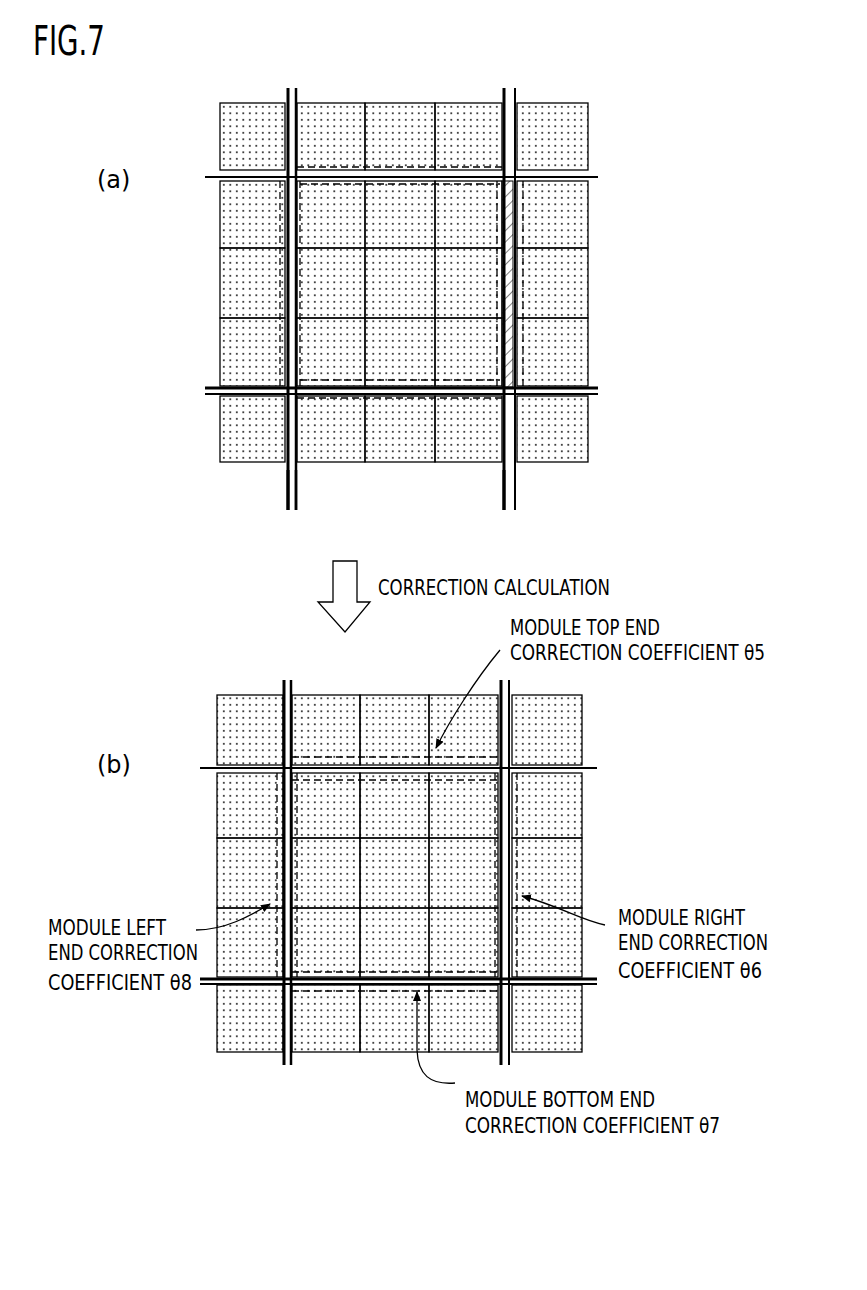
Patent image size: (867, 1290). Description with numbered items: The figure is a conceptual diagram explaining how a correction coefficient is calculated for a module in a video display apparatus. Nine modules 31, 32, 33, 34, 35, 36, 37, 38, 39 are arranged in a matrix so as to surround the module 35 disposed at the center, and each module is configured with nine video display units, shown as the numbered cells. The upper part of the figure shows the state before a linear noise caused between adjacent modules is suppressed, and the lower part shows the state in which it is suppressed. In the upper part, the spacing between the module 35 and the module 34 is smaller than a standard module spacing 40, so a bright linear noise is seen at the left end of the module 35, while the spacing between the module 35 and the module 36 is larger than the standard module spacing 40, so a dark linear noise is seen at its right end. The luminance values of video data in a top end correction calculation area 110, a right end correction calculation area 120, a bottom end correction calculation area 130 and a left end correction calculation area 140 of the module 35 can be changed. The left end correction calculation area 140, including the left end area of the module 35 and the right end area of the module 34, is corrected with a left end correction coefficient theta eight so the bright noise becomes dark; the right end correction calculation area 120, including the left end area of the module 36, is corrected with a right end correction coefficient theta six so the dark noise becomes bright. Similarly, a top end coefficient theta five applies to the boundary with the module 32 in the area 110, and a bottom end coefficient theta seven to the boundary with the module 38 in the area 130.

The module 31 is at (239, 421).
The module 32 is at (397, 421).
The module 33 is at (569, 423).
The module 34 is at (233, 579).
The module 35 is at (423, 288).
The module 36 is at (567, 579).
The module 37 is at (238, 740).
The module 38 is at (397, 737).
The module 39 is at (566, 735).
The standard module spacing 40 is at (320, 497).
The top end correction calculation area 110 is at (413, 165).
The right end correction calculation area 120 is at (530, 303).
The bottom end correction calculation area 130 is at (385, 398).
The left end correction calculation area 140 is at (282, 262).